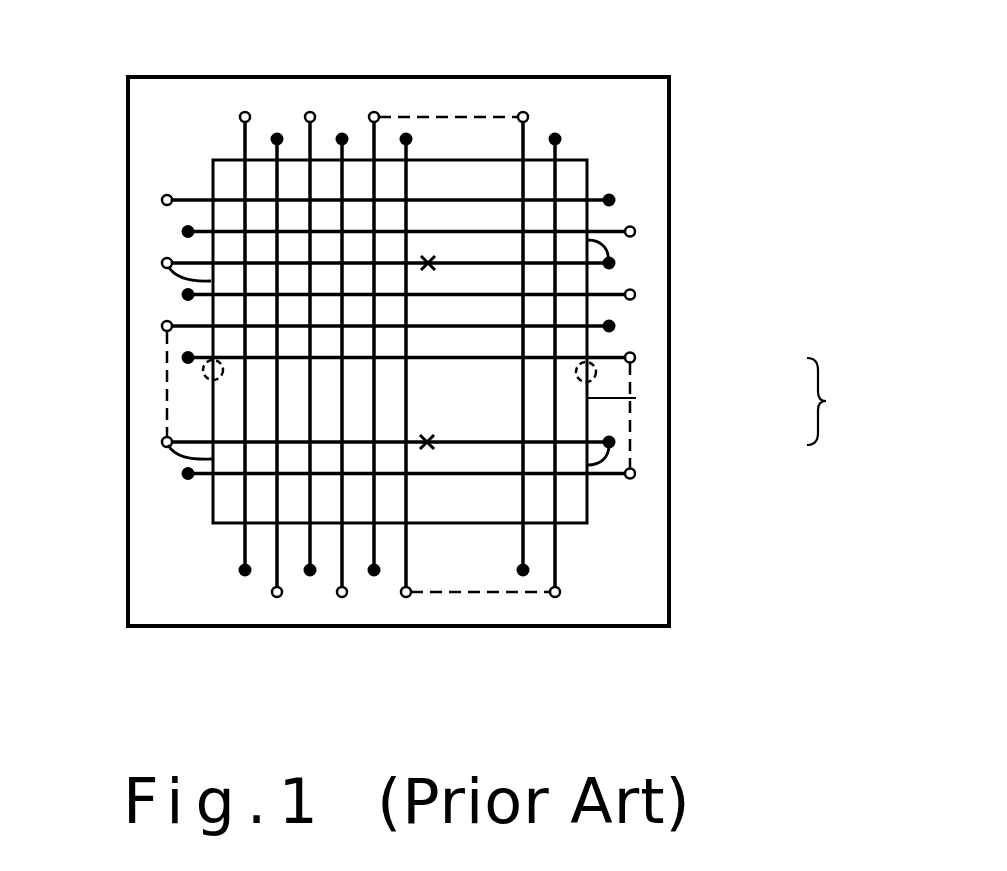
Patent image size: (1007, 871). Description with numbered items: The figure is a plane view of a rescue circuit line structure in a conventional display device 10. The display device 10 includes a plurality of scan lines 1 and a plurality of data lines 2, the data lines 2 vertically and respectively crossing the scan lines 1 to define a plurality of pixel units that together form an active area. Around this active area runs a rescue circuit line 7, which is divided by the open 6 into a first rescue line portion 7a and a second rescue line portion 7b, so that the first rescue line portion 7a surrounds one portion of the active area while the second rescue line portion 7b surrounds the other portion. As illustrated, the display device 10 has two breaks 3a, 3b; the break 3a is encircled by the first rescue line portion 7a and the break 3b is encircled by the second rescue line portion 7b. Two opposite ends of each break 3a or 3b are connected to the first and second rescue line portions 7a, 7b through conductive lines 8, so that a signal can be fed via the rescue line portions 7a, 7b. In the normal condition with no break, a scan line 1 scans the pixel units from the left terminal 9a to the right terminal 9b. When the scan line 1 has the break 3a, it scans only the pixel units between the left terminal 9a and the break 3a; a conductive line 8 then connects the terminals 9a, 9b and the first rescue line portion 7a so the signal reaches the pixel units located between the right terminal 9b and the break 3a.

The scan line 1 is at (483, 262).
The data line 2 is at (240, 422).
The break 3a is at (428, 262).
The break 3b is at (428, 448).
The open 6 is at (203, 372).
The rescue circuit line 7 is at (827, 401).
The first rescue line portion 7a is at (612, 331).
The second rescue line portion 7b is at (636, 398).
The conductive line 8 is at (170, 271).
The left terminal 9a is at (162, 263).
The right terminal 9b is at (614, 265).
The display device 10 is at (800, 94).